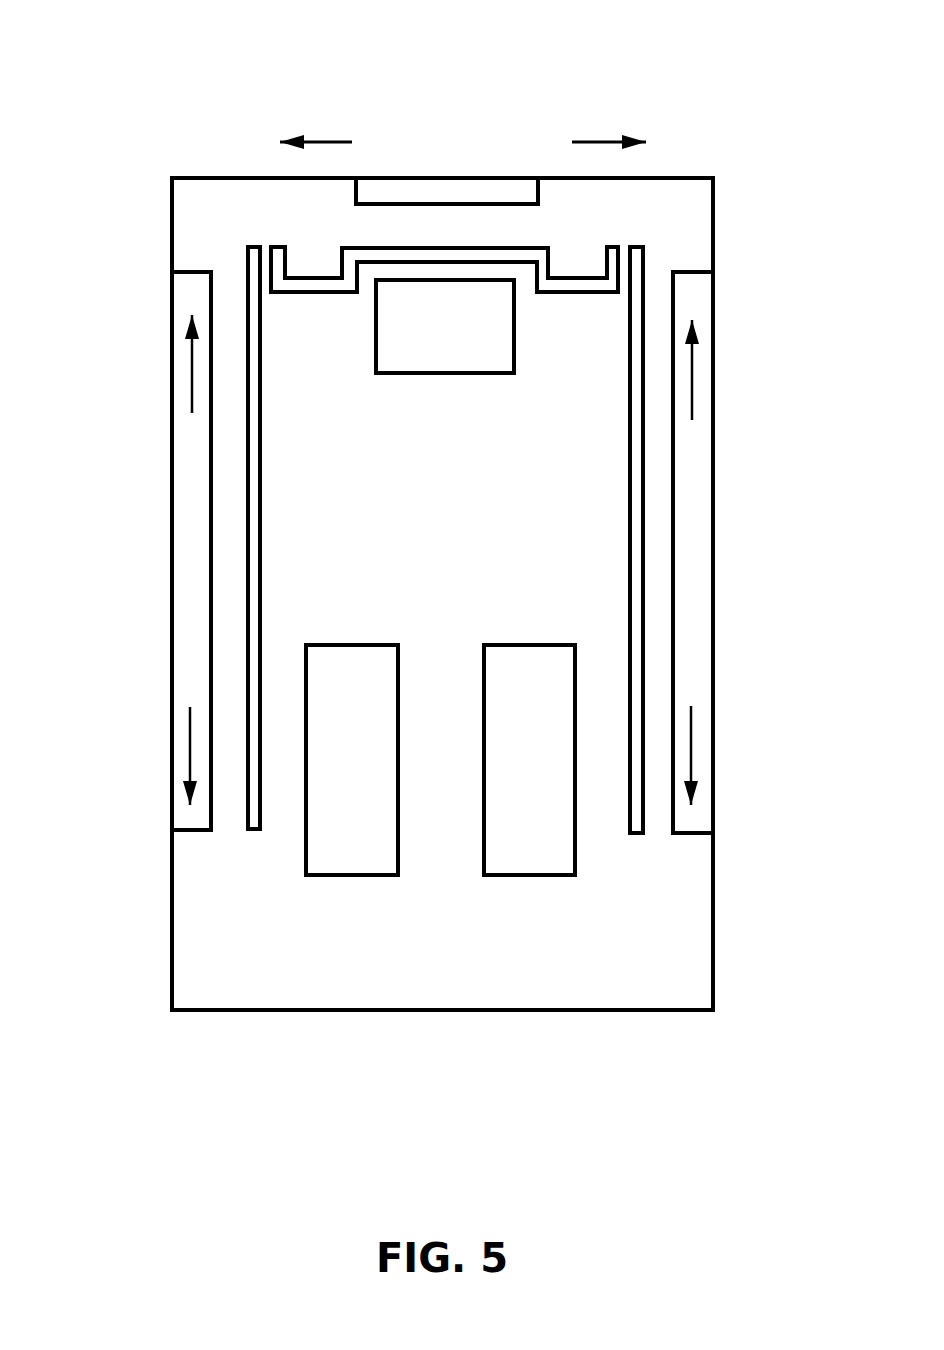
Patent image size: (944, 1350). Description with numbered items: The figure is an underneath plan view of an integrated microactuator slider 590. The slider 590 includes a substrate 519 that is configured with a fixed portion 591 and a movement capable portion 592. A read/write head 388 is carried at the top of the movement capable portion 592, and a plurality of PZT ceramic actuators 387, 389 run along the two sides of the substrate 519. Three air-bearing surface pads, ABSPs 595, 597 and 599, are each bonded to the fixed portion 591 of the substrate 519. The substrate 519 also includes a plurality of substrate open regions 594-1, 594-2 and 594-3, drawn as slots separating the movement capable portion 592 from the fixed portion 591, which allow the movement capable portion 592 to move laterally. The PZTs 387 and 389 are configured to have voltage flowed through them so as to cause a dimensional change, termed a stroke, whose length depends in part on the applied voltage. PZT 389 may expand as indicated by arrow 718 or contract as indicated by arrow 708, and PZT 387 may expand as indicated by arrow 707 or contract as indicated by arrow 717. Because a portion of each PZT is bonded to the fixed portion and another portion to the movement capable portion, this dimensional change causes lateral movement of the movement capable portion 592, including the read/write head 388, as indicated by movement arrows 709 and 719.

The integrated microactuator slider 590 is at (427, 32).
The substrate 519 is at (190, 212).
The movement capable portion 592 is at (230, 197).
The read/write head 388 is at (477, 195).
The movement arrow 709 is at (315, 142).
The movement arrow 719 is at (602, 145).
The substrate open region 594-1 is at (636, 272).
The substrate open region 594-2 is at (612, 256).
The substrate open region 594-3 is at (247, 823).
The ABSP 595 is at (422, 338).
The ABSP 599 is at (329, 775).
The ABSP 597 is at (506, 775).
The PZT ceramic actuator 389 is at (190, 547).
The arrow 718 is at (192, 370).
The arrow 708 is at (190, 757).
The PZT ceramic actuator 387 is at (693, 548).
The arrow 707 is at (693, 375).
The arrow 717 is at (688, 742).
The fixed portion 591 is at (444, 545).